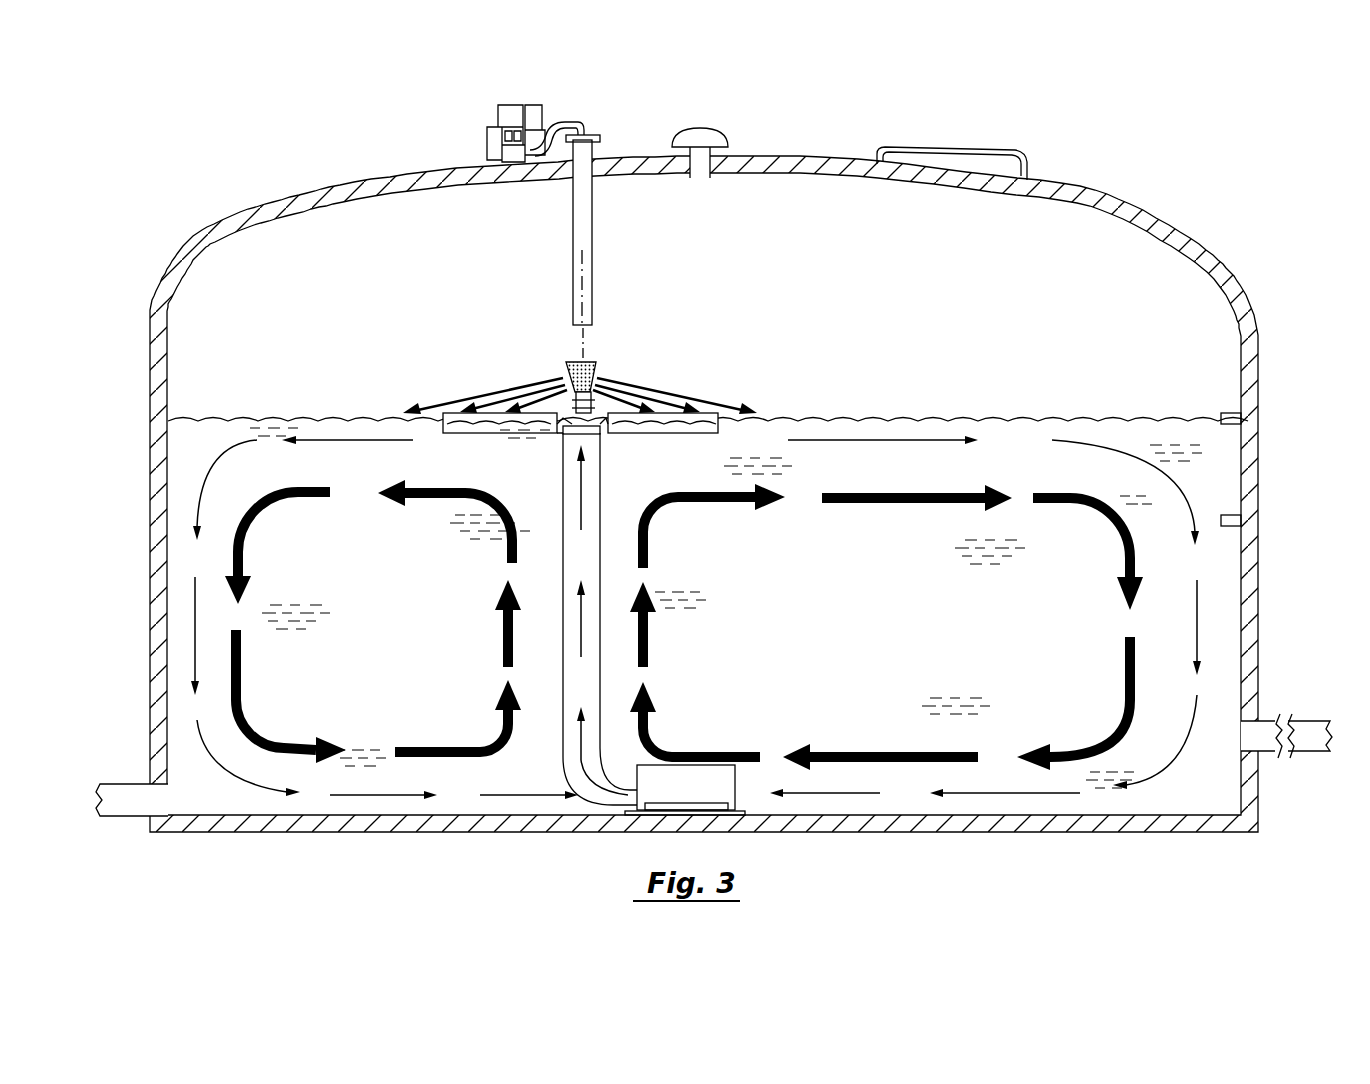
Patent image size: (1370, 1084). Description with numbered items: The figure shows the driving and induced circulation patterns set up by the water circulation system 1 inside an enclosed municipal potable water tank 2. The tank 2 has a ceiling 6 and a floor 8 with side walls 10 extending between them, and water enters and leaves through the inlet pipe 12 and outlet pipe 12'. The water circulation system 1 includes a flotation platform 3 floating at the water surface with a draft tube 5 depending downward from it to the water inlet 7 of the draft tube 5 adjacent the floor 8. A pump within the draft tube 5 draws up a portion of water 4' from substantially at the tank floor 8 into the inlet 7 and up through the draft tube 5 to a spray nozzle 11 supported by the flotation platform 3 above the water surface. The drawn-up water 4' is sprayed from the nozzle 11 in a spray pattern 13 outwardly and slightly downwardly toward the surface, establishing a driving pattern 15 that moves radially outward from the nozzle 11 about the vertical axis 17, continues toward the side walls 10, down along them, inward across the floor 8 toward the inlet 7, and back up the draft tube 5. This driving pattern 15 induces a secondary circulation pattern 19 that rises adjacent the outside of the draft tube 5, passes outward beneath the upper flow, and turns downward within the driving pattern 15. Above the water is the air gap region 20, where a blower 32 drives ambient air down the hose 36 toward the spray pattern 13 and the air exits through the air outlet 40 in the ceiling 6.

The water circulation system 1 is at (760, 345).
The tank 2 is at (1105, 182).
The flotation platform 3 is at (470, 372).
The drawn-up water portion 4' is at (644, 622).
The draft tube 5 is at (600, 488).
The ceiling 6 is at (822, 180).
The water inlet of the draft tube 7 is at (735, 790).
The floor 8 is at (336, 814).
The side walls 10 is at (168, 470).
The spray nozzle 11 is at (595, 365).
The inlet pipe 12 is at (1290, 721).
The outlet pipe 12' is at (132, 775).
The spray pattern 13 is at (512, 386).
The driving pattern 15 is at (363, 440).
The vertical axis 17 is at (582, 270).
The secondary circulation pattern 19 is at (265, 500).
The air gap region 20 is at (354, 300).
The blower 32 is at (470, 112).
The hose 36 is at (592, 250).
The air outlet 40 is at (722, 135).